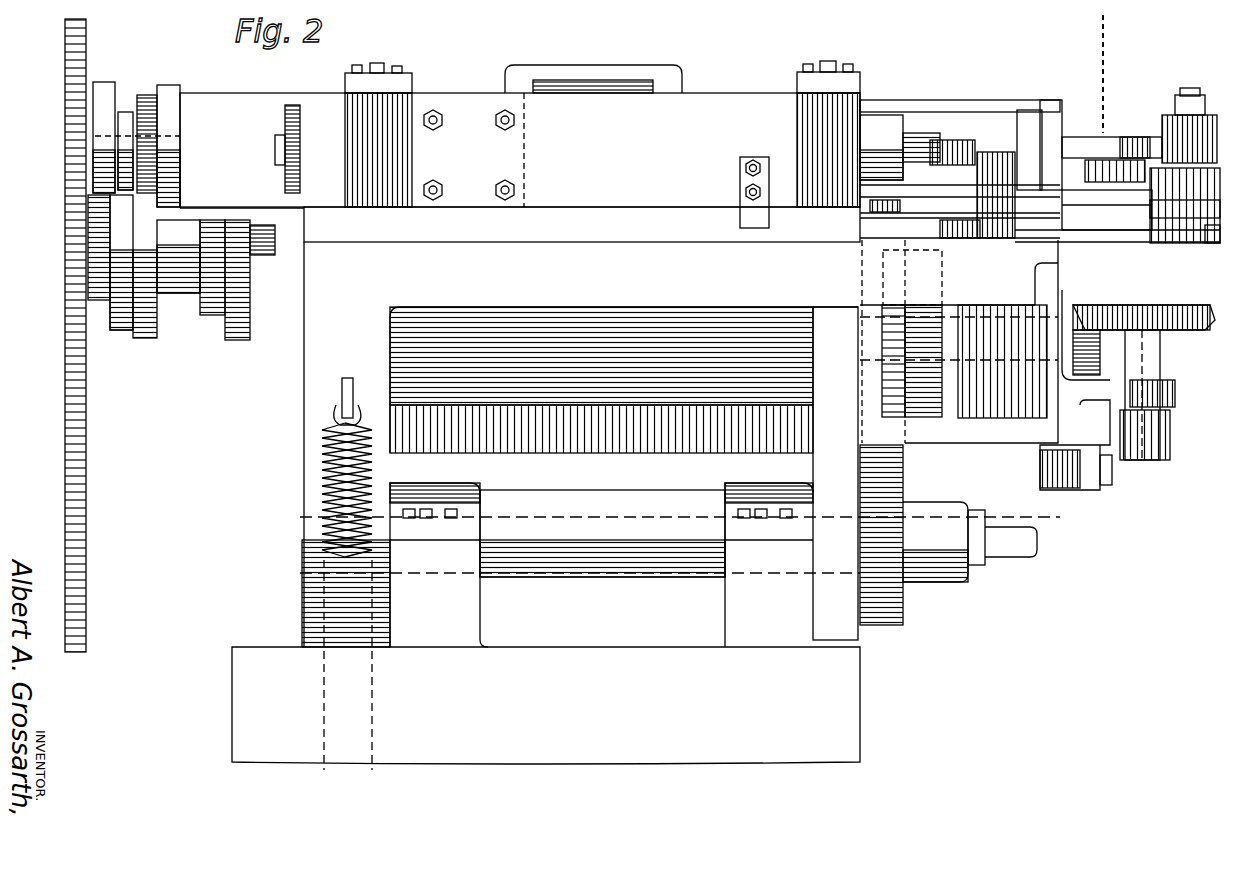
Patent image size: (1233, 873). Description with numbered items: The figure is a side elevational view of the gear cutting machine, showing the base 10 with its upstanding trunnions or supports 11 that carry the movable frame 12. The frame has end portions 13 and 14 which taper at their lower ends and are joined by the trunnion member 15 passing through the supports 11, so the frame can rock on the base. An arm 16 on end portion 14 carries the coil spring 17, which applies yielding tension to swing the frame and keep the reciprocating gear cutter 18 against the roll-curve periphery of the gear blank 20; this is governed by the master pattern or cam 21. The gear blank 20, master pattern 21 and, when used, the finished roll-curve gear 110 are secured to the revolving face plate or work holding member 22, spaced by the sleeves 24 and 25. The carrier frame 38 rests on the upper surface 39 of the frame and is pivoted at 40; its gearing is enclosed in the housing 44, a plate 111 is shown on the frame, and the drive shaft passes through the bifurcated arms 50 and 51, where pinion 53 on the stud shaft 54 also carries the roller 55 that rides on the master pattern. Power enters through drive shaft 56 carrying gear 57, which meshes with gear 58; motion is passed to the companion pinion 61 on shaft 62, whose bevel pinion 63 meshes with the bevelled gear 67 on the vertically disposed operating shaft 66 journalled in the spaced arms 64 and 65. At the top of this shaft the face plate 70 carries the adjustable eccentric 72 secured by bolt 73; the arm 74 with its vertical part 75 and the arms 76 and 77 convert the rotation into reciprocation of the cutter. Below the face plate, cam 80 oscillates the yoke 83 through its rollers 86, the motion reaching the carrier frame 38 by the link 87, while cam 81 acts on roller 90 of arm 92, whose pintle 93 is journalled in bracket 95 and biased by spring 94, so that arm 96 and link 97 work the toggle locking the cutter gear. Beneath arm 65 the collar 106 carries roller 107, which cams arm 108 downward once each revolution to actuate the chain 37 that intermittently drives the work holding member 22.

The base 10 is at (860, 690).
The trunnions or supports 11 is at (478, 490).
The movable frame 12 is at (443, 330).
The end portion 13 is at (823, 472).
The end portion 14 is at (303, 455).
The trunnion member 15 is at (600, 515).
The arm 16 is at (355, 386).
The coil spring 17 is at (303, 483).
The reciprocating gear cutter 18 is at (300, 195).
The gear blank 20 is at (250, 300).
The master pattern or cam 21 is at (122, 221).
The face plate or work holding member 22 is at (86, 472).
The sleeve 24 is at (95, 278).
The sleeve 25 is at (178, 295).
The chain 37 is at (1100, 40).
The carrier frame 38 is at (713, 185).
The upper surface 39 is at (625, 200).
The pivot 40 is at (385, 65).
The housing 44 is at (605, 62).
The bifurcated arm 50 is at (168, 88).
The bifurcated arm 51 is at (100, 100).
The pinion 53 is at (115, 156).
The stud shaft 54 is at (182, 160).
The roller 55 is at (125, 136).
The drive shaft 56 is at (1018, 550).
The gear 57 is at (905, 607).
The gear 58 is at (883, 380).
The companion pinion 61 is at (925, 405).
The shaft 62 is at (1008, 360).
The bevel pinion 63 is at (1100, 360).
The arm 64 is at (1085, 276).
The arm 65 is at (1175, 397).
The operating shaft 66 is at (1160, 345).
The bevelled gear 67 is at (1126, 305).
The face plate 70 is at (1178, 95).
The eccentric 72 is at (1200, 130).
The securing bolt 73 is at (1192, 88).
The arm 74 is at (1143, 150).
The vertical part 75 is at (1040, 132).
The arm 76 is at (917, 110).
The arm 77 is at (886, 150).
The cam 80 is at (1085, 200).
The cam 81 is at (1215, 243).
The yoke 83 is at (1025, 195).
The rollers 86 is at (1125, 195).
The link 87 is at (860, 185).
The roller 90 is at (1150, 236).
The arm 92 is at (1115, 233).
The pintle 93 is at (990, 178).
The spring 94 is at (1190, 243).
The bracket 95 is at (1010, 150).
The arm 96 is at (950, 165).
The link 97 is at (918, 240).
The collar 106 is at (1140, 462).
The roller 107 is at (1090, 436).
The arm 108 is at (1106, 480).
The roll-curve gear 110 is at (143, 330).
The plate 111 is at (762, 180).